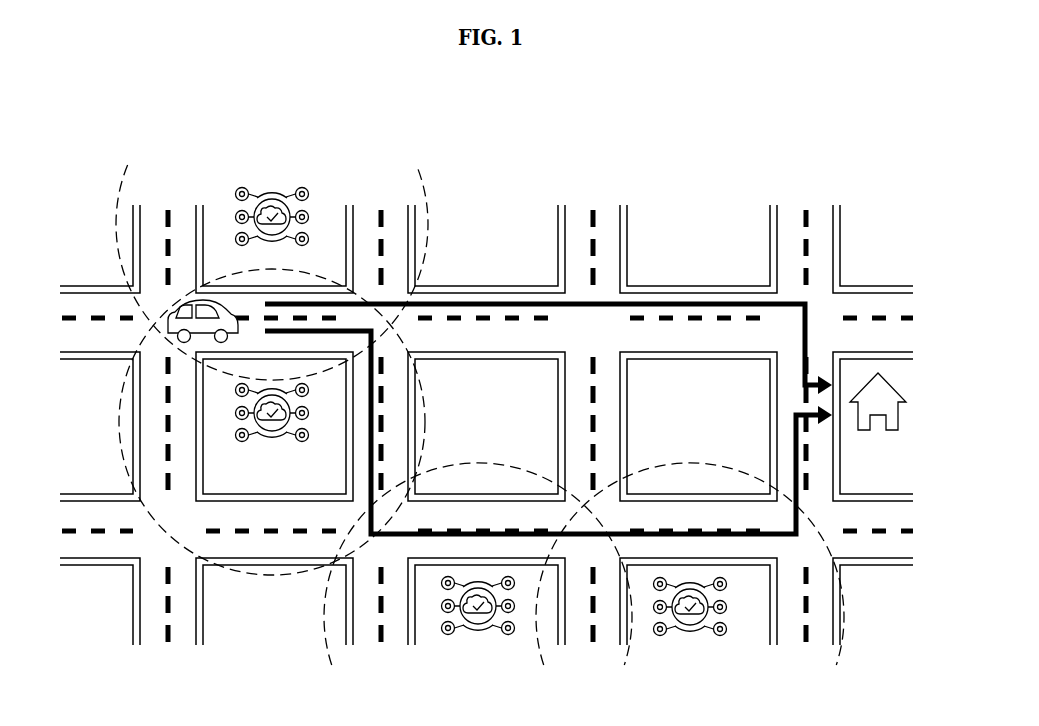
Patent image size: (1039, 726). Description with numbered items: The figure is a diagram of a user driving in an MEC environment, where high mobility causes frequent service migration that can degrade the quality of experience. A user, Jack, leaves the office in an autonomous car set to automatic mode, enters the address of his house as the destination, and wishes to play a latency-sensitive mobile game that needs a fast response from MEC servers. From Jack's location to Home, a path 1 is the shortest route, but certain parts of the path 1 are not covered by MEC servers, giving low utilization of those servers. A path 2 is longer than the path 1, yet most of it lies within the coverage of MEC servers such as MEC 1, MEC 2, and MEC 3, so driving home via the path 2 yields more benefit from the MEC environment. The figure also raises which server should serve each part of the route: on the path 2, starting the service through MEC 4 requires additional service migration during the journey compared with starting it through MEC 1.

The user Jack is at (167, 313).
The MEC 1 MEC1 is at (272, 428).
The MEC 2 MEC2 is at (478, 620).
The MEC 3 MEC3 is at (690, 621).
The MEC 4 MEC4 is at (272, 230).
The element path 1 is at (667, 297).
The element path 2 is at (470, 532).
The home Home is at (880, 417).